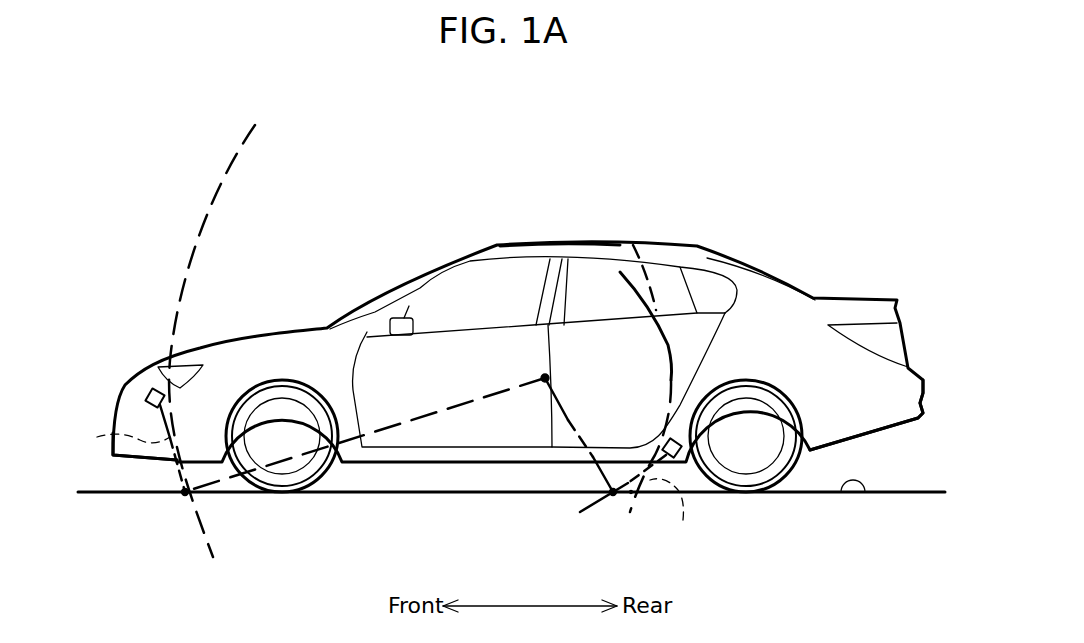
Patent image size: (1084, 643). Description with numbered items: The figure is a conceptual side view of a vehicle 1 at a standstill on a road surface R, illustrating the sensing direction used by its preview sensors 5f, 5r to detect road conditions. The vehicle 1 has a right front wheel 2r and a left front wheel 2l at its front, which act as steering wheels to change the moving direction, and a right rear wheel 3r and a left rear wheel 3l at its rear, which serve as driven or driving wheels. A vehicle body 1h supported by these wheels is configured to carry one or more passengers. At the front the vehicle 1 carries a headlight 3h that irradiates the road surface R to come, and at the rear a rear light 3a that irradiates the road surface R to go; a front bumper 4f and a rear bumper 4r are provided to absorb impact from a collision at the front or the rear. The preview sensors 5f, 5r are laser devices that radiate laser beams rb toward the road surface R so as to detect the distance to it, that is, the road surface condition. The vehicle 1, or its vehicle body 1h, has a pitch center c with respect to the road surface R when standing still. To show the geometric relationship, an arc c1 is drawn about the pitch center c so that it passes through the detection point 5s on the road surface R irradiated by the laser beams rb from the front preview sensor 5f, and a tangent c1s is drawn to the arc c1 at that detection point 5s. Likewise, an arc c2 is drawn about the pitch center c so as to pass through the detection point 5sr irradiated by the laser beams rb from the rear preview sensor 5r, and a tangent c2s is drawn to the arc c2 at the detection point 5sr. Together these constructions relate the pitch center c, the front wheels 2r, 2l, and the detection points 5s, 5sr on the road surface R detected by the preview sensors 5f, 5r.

The vehicle 1 is at (578, 182).
The vehicle body 1h is at (528, 247).
The left front wheel 2l is at (282, 467).
The right front wheel 2r is at (278, 483).
The left rear wheel 3l is at (749, 467).
The right rear wheel 3r is at (747, 483).
The headlight 3h is at (180, 372).
The rear light 3a is at (888, 340).
The front bumper 4f is at (115, 408).
The rear bumper 4r is at (923, 393).
The preview sensor 5f is at (147, 400).
The preview sensor 5r is at (678, 463).
The detection point 5s is at (183, 495).
The detection point 5sr is at (612, 498).
The arc c1 is at (207, 198).
The arc c2 is at (633, 245).
The tangent c1s is at (177, 478).
The tangent c2s is at (633, 500).
The pitch center c is at (551, 369).
The laser beams rb is at (383, 488).
The road surface R is at (858, 497).